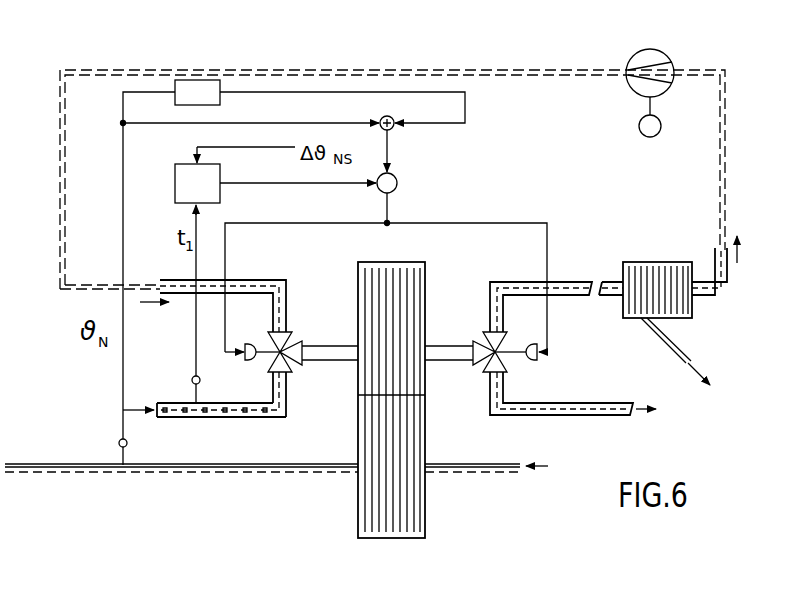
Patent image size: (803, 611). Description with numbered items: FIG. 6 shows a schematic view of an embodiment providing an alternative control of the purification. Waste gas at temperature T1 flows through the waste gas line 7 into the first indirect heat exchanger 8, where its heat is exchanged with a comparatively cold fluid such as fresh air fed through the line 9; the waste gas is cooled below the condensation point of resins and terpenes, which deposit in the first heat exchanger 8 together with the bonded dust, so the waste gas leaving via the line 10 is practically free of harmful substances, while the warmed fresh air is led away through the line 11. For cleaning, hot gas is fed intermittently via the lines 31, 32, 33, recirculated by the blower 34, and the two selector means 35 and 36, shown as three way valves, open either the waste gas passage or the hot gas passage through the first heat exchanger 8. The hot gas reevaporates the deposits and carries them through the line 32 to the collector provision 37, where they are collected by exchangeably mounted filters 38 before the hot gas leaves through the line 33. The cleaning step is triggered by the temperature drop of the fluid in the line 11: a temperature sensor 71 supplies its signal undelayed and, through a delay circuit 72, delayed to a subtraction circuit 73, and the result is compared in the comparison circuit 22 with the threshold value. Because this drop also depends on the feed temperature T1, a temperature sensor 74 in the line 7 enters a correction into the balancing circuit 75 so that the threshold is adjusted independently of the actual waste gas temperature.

The waste gas line 7 is at (213, 413).
The first indirect heat exchanger 8 is at (347, 403).
The line 9 is at (478, 473).
The line 10 is at (573, 414).
The line 11 is at (312, 473).
The comparison circuit 22 is at (393, 183).
The line 31 is at (245, 280).
The line 32 is at (580, 280).
The line 33 is at (718, 262).
The blower 34 is at (665, 90).
The selector means 35 is at (292, 335).
The selector means 36 is at (485, 336).
The collector provision 37 is at (654, 260).
The filters 38 is at (647, 307).
The temperature sensor 71 is at (120, 457).
The delay circuit 72 is at (197, 80).
The subtraction circuit 73 is at (387, 116).
The temperature sensor 74 is at (193, 392).
The balancing circuit 75 is at (178, 170).